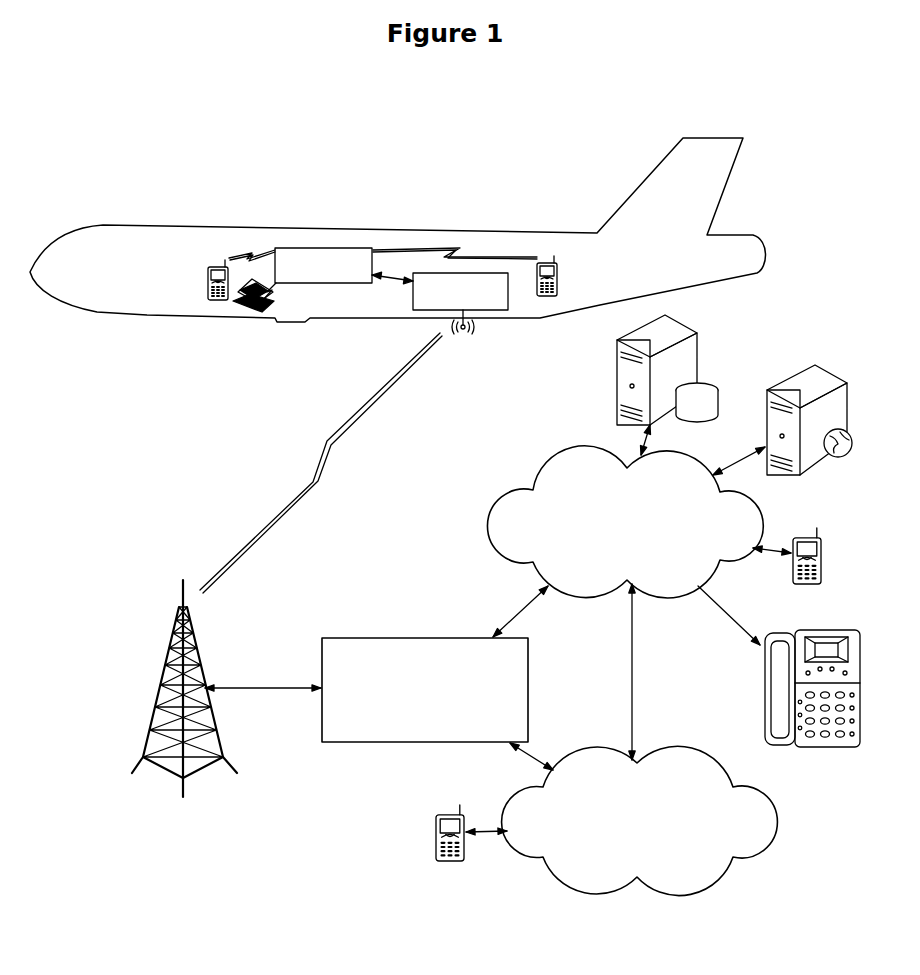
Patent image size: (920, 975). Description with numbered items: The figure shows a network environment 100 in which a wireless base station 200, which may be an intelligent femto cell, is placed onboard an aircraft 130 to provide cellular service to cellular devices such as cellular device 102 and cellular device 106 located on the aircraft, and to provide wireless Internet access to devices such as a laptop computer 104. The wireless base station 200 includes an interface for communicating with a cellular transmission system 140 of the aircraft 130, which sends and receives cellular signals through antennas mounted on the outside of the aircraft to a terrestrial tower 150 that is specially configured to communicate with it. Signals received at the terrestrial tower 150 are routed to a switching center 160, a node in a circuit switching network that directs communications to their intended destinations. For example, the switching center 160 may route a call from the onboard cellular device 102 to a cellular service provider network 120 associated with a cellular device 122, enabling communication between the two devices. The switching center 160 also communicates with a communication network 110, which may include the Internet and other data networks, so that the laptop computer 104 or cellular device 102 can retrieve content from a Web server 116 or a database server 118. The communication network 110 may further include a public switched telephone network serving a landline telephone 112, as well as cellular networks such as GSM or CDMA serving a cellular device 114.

The network environment 100 is at (100, 127).
The aircraft 130 is at (168, 224).
The cellular device 102 is at (203, 268).
The laptop computer 104 is at (272, 307).
The cellular device 106 is at (551, 268).
The wireless base station 200 is at (311, 275).
The cellular transmission system 140 is at (448, 301).
The database server 118 is at (691, 330).
The Web server 116 is at (828, 371).
The communication network 110 is at (614, 546).
The cellular device 114 is at (820, 528).
The telephone 112 is at (862, 642).
The terrestrial tower 150 is at (163, 619).
The switching center 160 is at (411, 716).
The cellular service provider network 120 is at (623, 858).
The cellular device 122 is at (429, 827).